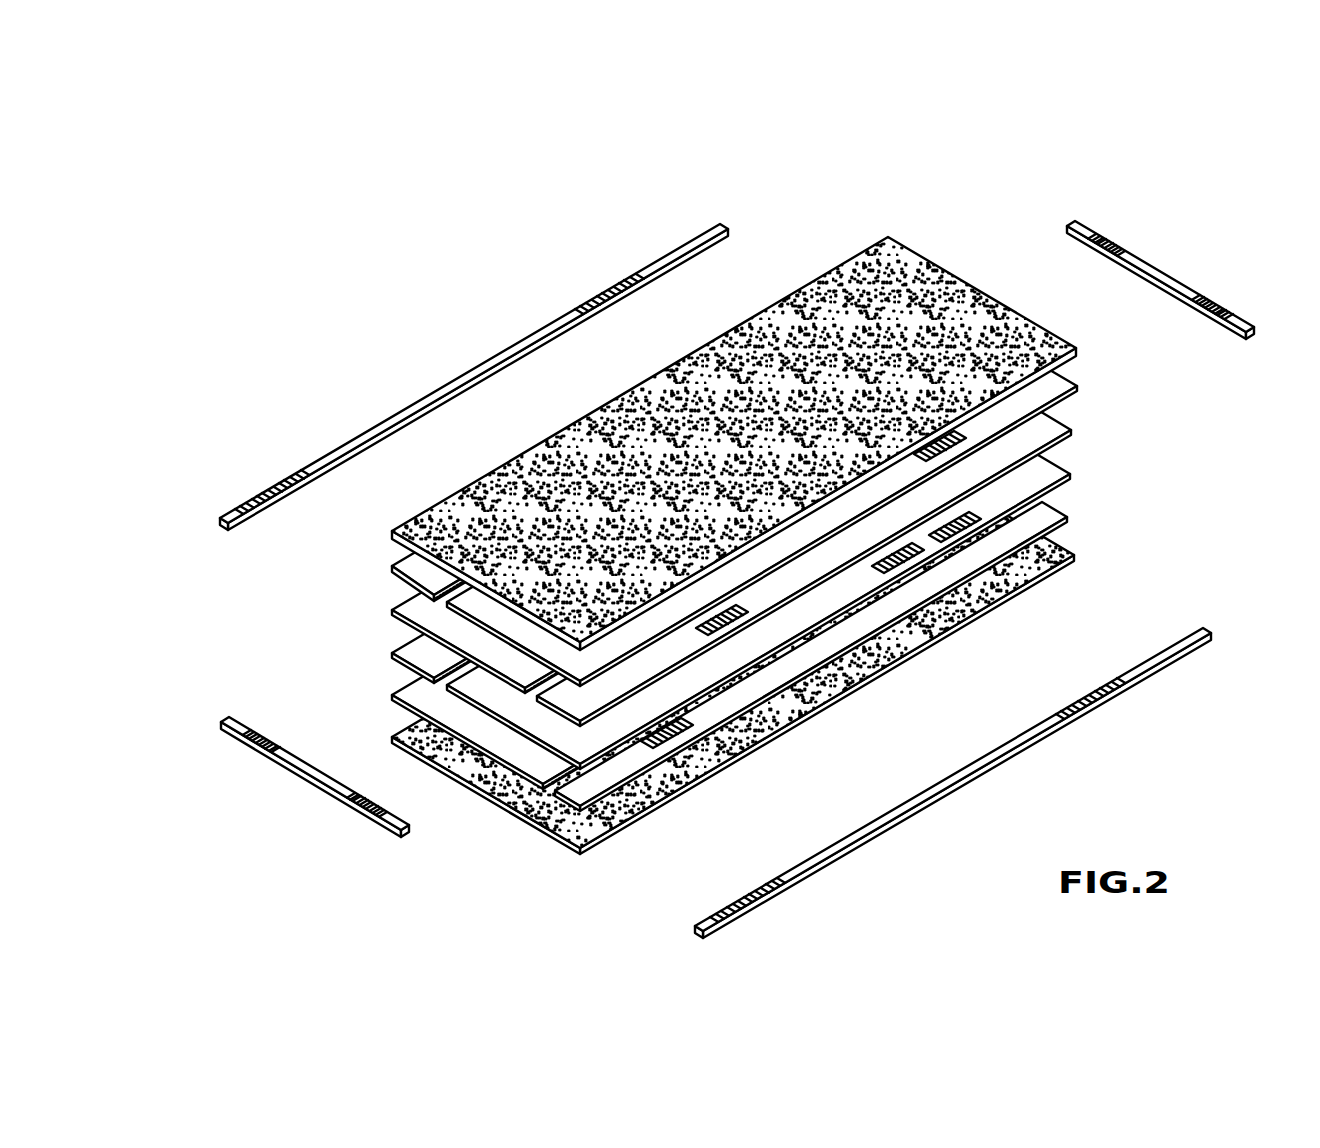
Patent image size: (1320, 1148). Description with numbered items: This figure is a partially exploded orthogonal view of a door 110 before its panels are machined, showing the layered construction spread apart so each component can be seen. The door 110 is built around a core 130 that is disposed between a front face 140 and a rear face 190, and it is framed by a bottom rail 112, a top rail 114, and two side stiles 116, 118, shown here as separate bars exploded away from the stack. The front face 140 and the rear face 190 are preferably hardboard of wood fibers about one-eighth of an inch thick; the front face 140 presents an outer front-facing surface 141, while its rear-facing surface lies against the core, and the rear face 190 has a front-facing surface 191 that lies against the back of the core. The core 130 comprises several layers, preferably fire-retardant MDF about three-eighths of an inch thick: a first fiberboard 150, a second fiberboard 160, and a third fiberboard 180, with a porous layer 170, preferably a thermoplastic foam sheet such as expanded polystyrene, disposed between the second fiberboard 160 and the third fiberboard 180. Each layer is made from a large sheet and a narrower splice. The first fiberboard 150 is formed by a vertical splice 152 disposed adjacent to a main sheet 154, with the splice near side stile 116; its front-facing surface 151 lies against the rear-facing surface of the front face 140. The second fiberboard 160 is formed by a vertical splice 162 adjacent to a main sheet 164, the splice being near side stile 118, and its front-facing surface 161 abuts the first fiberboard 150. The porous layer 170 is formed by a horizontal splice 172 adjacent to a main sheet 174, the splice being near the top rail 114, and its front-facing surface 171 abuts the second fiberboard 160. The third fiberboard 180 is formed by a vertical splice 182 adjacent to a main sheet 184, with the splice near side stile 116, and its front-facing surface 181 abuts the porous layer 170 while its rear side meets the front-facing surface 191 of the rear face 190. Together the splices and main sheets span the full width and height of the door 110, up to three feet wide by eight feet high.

The door 110 is at (1110, 166).
The bottom rail 112 is at (302, 786).
The top rail 114 is at (1163, 271).
The side stile 116 is at (470, 373).
The side stile 118 is at (982, 776).
The core 130 is at (262, 621).
The front face 140 is at (937, 269).
The front-facing surface 141 is at (453, 513).
The first fiberboard 150 is at (1062, 370).
The front-facing surface 151 is at (1052, 386).
The vertical splice 152 is at (412, 560).
The main sheet 154 is at (413, 600).
The second fiberboard 160 is at (1062, 416).
The front-facing surface 161 is at (1052, 433).
The vertical splice 162 is at (576, 700).
The main sheet 164 is at (423, 622).
The porous layer 170 is at (1062, 461).
The front-facing surface 171 is at (813, 604).
The horizontal splice 172 is at (1052, 478).
The main sheet 174 is at (415, 660).
The third fiberboard 180 is at (1062, 506).
The front-facing surface 181 is at (1052, 523).
The vertical splice 182 is at (611, 768).
The main sheet 184 is at (415, 700).
The rear face 190 is at (1070, 553).
The front-facing surface 191 is at (958, 602).